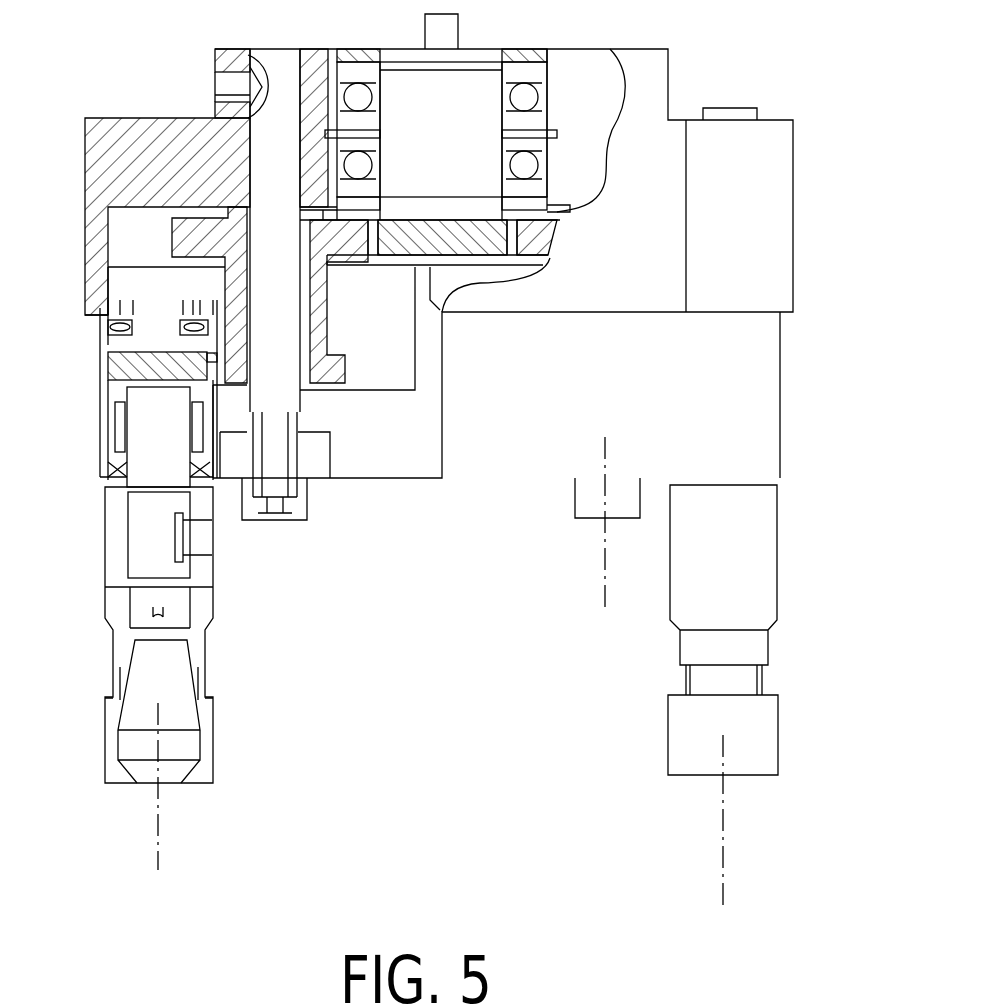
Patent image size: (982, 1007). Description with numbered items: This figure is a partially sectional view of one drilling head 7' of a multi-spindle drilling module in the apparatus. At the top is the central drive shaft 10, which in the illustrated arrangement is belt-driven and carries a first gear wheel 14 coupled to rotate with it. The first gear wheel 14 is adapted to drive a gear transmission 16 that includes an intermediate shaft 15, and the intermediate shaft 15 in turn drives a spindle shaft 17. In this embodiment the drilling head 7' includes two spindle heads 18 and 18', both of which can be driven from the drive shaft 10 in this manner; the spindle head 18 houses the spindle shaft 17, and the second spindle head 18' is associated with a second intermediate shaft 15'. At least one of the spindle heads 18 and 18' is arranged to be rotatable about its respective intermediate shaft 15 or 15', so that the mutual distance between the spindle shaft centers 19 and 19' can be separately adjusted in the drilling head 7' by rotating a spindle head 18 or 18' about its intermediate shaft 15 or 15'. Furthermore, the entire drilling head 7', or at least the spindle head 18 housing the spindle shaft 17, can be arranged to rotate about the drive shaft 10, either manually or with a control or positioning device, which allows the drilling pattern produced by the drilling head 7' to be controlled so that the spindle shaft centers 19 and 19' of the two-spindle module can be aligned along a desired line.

The drilling head 7' is at (557, 284).
The central drive shaft 10 is at (442, 38).
The first gear wheel 14 is at (452, 238).
The intermediate shaft 15 is at (178, 263).
The intermediate shaft 15' is at (569, 524).
The gear transmission 16 is at (320, 338).
The spindle shaft 17 is at (152, 397).
The spindle head 18 is at (129, 635).
The spindle head 18' is at (758, 630).
The spindle shaft center 19 is at (116, 791).
The spindle shaft center 19' is at (685, 821).